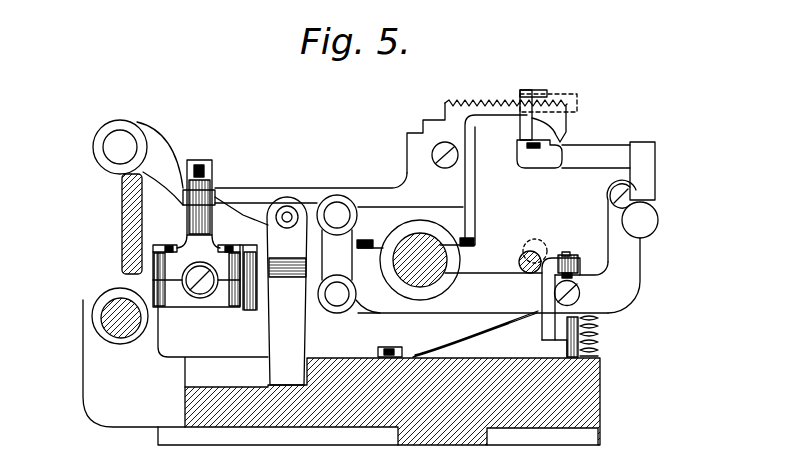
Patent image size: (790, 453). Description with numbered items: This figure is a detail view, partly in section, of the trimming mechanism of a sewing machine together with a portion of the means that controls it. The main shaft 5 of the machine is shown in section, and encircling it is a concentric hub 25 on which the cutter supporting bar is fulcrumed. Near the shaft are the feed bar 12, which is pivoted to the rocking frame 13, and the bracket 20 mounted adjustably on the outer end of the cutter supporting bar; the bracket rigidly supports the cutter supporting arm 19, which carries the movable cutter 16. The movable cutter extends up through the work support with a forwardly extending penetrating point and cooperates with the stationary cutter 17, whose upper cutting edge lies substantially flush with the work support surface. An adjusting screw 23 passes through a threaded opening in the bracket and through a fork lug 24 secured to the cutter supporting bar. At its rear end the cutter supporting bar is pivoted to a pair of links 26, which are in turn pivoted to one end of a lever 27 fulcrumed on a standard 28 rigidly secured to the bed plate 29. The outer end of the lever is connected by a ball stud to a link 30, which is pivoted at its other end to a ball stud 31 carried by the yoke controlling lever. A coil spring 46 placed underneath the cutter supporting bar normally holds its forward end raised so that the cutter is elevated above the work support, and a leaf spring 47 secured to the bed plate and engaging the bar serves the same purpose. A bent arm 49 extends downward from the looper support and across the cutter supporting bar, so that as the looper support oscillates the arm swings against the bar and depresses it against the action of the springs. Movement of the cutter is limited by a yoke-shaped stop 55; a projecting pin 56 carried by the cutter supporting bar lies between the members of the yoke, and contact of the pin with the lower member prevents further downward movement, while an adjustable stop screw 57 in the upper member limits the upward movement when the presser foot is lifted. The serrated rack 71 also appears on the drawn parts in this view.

The rocking frame 13 is at (122, 233).
The link 30 is at (195, 226).
The lever 27 is at (243, 203).
The feed bar 12 is at (380, 195).
The ball stud 31 is at (202, 292).
The standard 28 is at (287, 291).
The links 26 is at (337, 254).
The concentric hub 25 is at (388, 293).
The main shaft 5 is at (440, 248).
The leaf spring 47 is at (497, 326).
The bed plate 29 is at (570, 397).
The rack teeth 71 is at (506, 91).
The movable cutter 16 is at (538, 92).
The stationary cutter 17 is at (577, 100).
The cutter supporting arm 19 is at (523, 127).
The bracket 20 is at (648, 157).
The fork lug 24 is at (637, 197).
The adjusting screw 23 is at (642, 223).
The bent arm 49 is at (534, 250).
The adjustable stop screw 57 is at (566, 254).
The projecting pin 56 is at (580, 297).
The coil spring 46 is at (658, 343).
The stop 55 is at (598, 348).